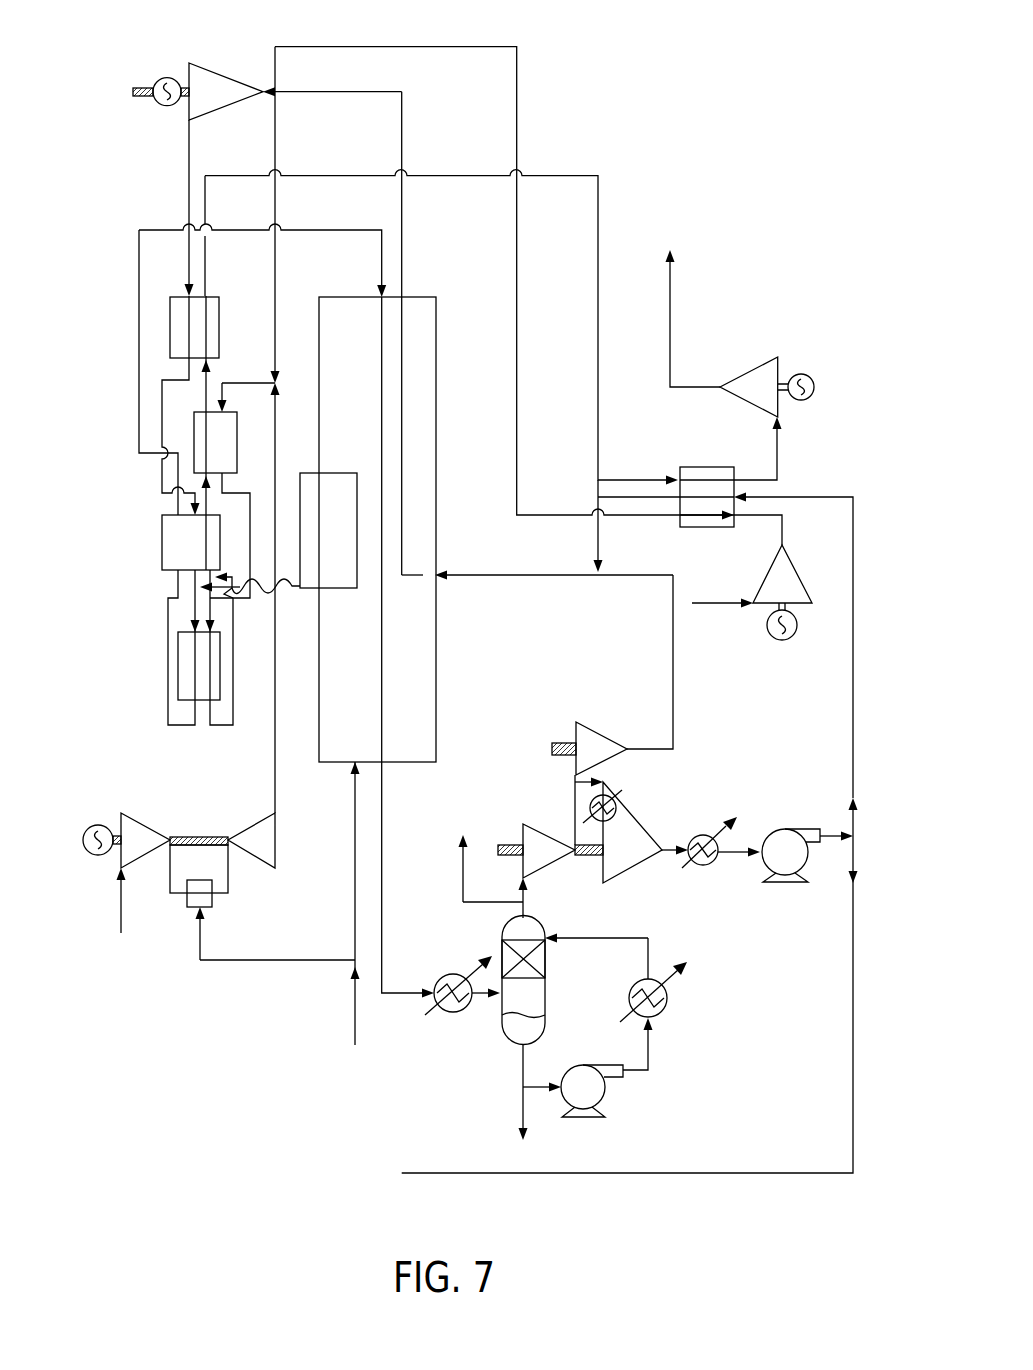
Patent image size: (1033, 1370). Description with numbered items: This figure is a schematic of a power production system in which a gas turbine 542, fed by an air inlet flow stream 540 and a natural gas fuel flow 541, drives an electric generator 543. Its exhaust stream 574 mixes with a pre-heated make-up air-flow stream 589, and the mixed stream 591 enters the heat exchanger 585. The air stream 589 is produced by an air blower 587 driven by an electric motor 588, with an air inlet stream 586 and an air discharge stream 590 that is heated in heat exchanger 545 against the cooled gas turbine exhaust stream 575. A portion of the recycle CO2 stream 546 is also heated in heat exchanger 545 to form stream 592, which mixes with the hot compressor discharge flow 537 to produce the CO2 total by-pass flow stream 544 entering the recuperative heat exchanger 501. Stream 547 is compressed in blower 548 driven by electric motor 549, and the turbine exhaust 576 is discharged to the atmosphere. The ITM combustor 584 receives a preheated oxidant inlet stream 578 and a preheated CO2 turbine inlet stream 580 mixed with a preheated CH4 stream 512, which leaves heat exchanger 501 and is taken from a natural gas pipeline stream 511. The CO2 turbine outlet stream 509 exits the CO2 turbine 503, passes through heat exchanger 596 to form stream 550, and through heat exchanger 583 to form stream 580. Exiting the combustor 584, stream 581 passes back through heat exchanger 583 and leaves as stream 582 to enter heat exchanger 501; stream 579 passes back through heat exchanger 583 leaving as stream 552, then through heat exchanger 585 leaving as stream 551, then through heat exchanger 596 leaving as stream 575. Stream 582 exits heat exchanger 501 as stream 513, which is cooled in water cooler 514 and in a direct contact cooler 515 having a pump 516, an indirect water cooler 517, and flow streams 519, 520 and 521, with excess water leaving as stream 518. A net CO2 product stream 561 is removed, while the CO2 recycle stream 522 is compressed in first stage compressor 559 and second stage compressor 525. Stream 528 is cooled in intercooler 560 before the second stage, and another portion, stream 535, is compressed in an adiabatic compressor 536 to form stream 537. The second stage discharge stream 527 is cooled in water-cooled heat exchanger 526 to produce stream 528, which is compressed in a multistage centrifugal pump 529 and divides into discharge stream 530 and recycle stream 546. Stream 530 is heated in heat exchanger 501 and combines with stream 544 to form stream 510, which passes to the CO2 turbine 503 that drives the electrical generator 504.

The recuperative heat exchanger 501 is at (437, 395).
The CO2 turbine 503 is at (212, 72).
The electrical generator 504 is at (167, 77).
The CO2 turbine outlet stream 509 is at (189, 172).
The CO2 turbine inlet stream 510 is at (403, 130).
The natural gas pipeline stream 511 is at (355, 1032).
The CH4 stream 512 is at (312, 473).
The cooled CO2 turbine outlet stream 513 is at (385, 995).
The water cooler 514 is at (452, 1012).
The direct contact cooler 515 is at (545, 1010).
The pump 516 is at (610, 1087).
The indirect water cooler 517 is at (667, 998).
The excess water stream 518 is at (523, 1107).
The water circulation flow stream 519 is at (537, 1092).
The water circulation flow stream 520 is at (648, 1050).
The water circulation flow stream 521 is at (595, 940).
The CO2 recycle stream 522 is at (525, 907).
The second stage compressor 525 is at (640, 863).
The water-cooled heat exchanger 526 is at (703, 866).
The second stage discharge stream 527 is at (672, 857).
The CO2 stream 528 is at (607, 783).
The multistage centrifugal pump 529 is at (783, 883).
The discharge stream 530 is at (853, 978).
The first stage discharge portion 535 is at (575, 807).
The adiabatic compressor 536 is at (600, 722).
The hot CO2 compressor discharge flow 537 is at (673, 673).
The air inlet flow stream 540 is at (121, 933).
The natural gas fuel flow 541 is at (268, 962).
The gas turbine 542 is at (200, 835).
The electric generator 543 is at (95, 825).
The CO2 total by-pass flow stream 544 is at (508, 573).
The heat exchanger 545 is at (707, 466).
The recycle CO2 stream 546 is at (853, 735).
The cooled exhaust stream 547 is at (780, 457).
The blower 548 is at (732, 377).
The electric motor 549 is at (815, 385).
The CO2 stream 550 is at (189, 372).
The depleted gas stream 551 is at (213, 383).
The depleted gas stream 552 is at (205, 530).
The first stage compressor 559 is at (523, 832).
The intercooler 560 is at (618, 812).
The net CO2 product stream 561 is at (458, 977).
The exhaust stream 574 is at (275, 775).
The cooled gas turbine exhaust stream 575 is at (482, 177).
The turbine exhaust 576 is at (670, 312).
The preheated oxidant inlet stream 578 is at (256, 545).
The depleted gas stream 579 is at (233, 672).
The preheated CO2 turbine inlet stream 580 is at (200, 588).
The ITM combustor outlet stream 581 is at (168, 672).
The CO2 turbine outlet flow stream 582 is at (316, 232).
The heat exchanger 583 is at (162, 540).
The ITM combustor 584 is at (178, 640).
The heat exchanger 585 is at (194, 432).
The air inlet stream 586 is at (728, 602).
The air blower 587 is at (800, 572).
The electric motor 588 is at (782, 642).
The pre-heated make-up air-flow stream 589 is at (517, 105).
The air discharge stream 590 is at (783, 528).
The mixed stream 591 is at (273, 392).
The heated recycle CO2 stream 592 is at (600, 543).
The heat exchanger 596 is at (170, 320).